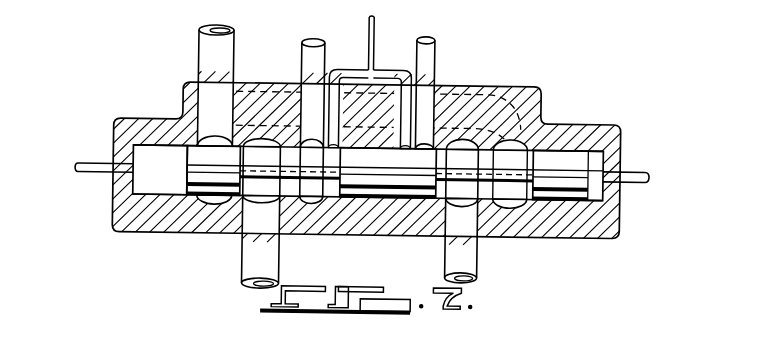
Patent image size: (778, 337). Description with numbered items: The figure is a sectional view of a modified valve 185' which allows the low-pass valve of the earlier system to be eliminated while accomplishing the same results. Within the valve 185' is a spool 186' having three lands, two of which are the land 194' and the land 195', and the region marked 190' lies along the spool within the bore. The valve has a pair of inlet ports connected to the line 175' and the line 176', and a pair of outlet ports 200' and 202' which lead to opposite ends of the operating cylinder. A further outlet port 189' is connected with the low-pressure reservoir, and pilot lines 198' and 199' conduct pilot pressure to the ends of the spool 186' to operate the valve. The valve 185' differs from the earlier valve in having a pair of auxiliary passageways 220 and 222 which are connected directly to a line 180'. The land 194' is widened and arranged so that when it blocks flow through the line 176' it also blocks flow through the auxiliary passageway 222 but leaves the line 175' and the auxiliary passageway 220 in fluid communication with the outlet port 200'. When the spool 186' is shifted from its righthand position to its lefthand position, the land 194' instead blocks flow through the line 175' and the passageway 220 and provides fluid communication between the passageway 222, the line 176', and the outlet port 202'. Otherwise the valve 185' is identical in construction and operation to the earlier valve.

The valve 185' is at (389, 144).
The spool 186' is at (162, 205).
The outlet port 189' is at (185, 114).
The spool land 190' is at (213, 208).
The land 194' is at (388, 206).
The land 195' is at (573, 207).
The pilot line 198' is at (91, 148).
The pilot line 199' is at (641, 156).
The line 175' is at (285, 120).
The line 176' is at (453, 93).
The line 180' is at (401, 37).
The outlet port 200' is at (288, 213).
The outlet port 202' is at (489, 211).
The auxiliary passageway 220 is at (339, 84).
The auxiliary passageway 222 is at (393, 82).